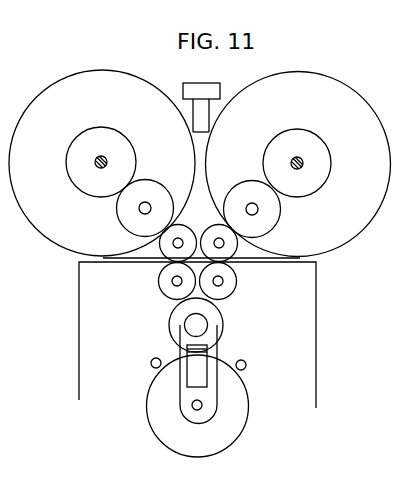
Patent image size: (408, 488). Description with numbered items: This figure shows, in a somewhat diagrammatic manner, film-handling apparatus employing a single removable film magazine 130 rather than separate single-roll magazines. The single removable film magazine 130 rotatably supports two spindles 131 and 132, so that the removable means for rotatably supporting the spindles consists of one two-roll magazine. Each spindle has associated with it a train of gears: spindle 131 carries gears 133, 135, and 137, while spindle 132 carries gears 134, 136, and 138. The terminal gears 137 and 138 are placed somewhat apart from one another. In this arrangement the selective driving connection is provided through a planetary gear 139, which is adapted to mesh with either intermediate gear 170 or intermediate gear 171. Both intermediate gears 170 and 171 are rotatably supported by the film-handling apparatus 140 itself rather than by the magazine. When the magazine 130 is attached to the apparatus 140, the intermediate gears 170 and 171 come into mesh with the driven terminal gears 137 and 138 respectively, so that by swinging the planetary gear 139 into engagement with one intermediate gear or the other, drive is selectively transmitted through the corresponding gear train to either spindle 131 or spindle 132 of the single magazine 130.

The single removable film magazine 130 is at (202, 127).
The spindle 131 is at (297, 157).
The spindle 132 is at (101, 156).
The gear 133 is at (302, 128).
The gear 134 is at (131, 143).
The gear 135 is at (247, 180).
The gear 136 is at (157, 179).
The terminal gear 137 is at (236, 258).
The terminal gear 138 is at (187, 227).
The planetary gear 139 is at (224, 321).
The film-handling apparatus 140 is at (124, 352).
The intermediate gear 170 is at (233, 293).
The intermediate gear 171 is at (168, 296).